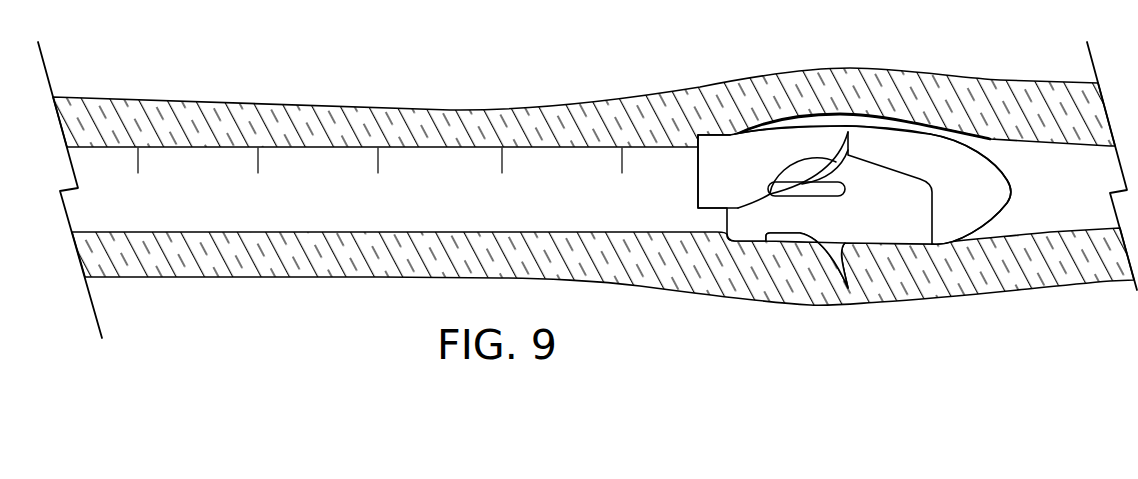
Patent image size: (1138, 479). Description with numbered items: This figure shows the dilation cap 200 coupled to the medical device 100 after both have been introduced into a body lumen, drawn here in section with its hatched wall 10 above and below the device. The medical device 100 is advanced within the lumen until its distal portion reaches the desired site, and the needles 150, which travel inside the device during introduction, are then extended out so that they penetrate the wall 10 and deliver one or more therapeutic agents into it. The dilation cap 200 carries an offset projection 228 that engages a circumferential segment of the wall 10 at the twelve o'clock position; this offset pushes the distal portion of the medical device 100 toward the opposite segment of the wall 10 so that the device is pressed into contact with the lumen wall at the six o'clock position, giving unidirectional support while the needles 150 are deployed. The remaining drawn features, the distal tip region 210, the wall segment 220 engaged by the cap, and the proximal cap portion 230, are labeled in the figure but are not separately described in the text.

The wall 10 is at (545, 112).
The medical device 100 is at (440, 100).
The needles 150 is at (828, 262).
The dilation cap 200 is at (933, 108).
The distal tip 210 is at (1000, 167).
The vessel wall tissue region 220 is at (822, 90).
The projection 228 is at (780, 125).
The proximal cap 230 is at (713, 137).